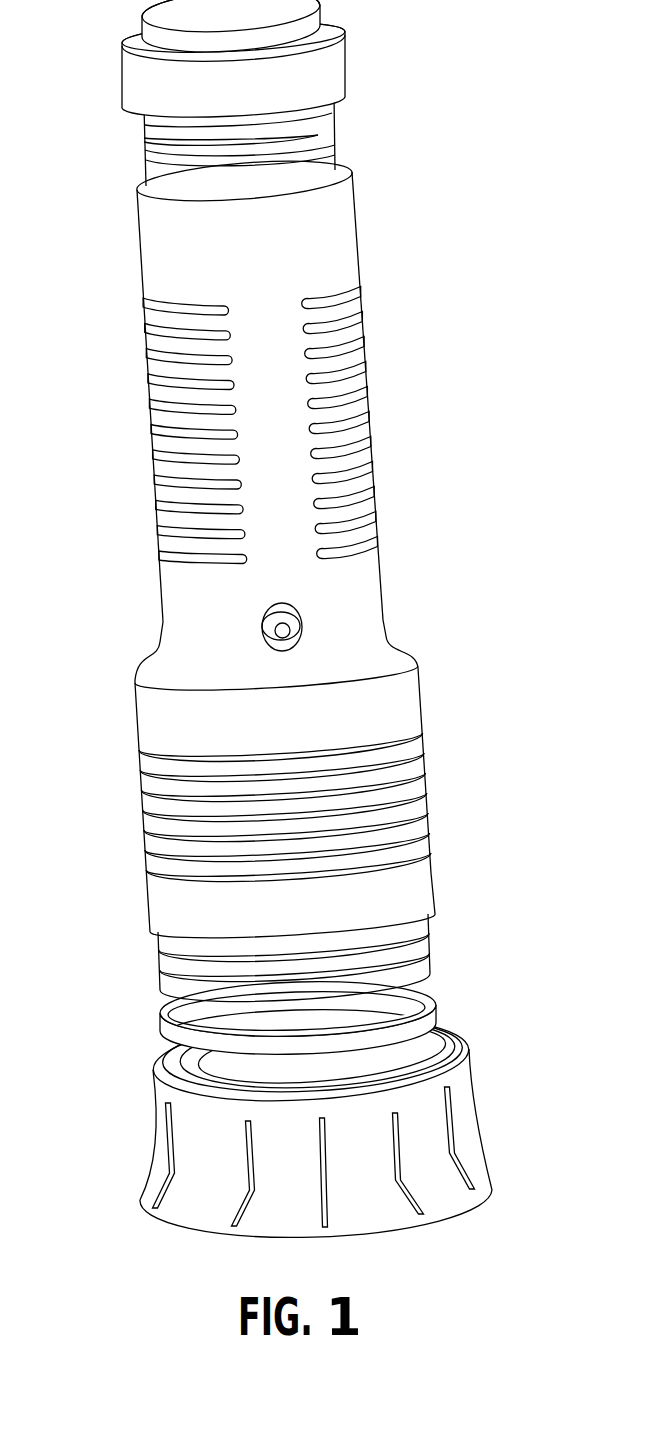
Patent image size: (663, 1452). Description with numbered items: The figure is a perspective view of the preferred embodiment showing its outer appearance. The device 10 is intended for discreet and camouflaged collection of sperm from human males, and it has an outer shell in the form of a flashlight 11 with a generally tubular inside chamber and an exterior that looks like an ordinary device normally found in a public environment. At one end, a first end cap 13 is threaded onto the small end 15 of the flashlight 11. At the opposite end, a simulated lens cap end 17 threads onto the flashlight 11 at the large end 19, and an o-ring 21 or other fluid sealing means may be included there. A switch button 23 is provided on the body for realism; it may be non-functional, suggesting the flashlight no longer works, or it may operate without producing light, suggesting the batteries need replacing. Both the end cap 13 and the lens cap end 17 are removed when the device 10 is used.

The device 10 is at (93, 425).
The flashlight 11 is at (400, 703).
The first end cap 13 is at (323, 78).
The small end 15 is at (168, 233).
The simulated lens cap end 17 is at (463, 1133).
The large end 19 is at (172, 903).
The o-ring 21 is at (167, 1027).
The switch button 23 is at (297, 626).